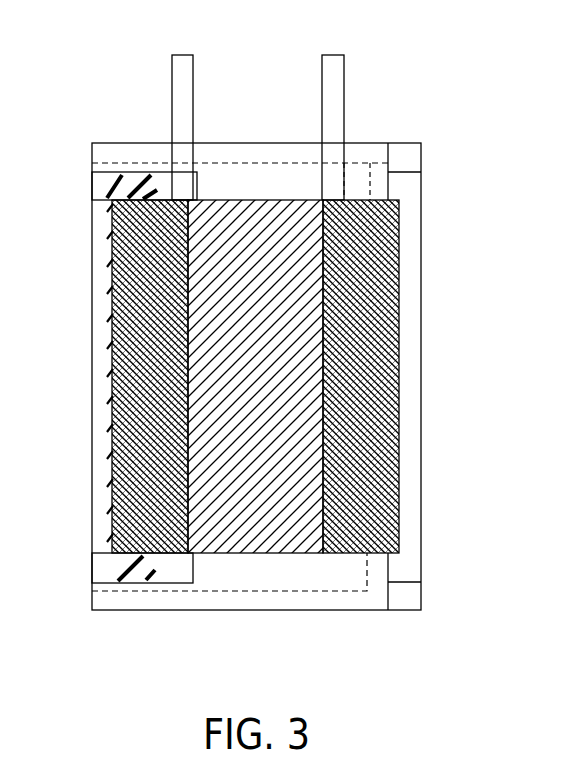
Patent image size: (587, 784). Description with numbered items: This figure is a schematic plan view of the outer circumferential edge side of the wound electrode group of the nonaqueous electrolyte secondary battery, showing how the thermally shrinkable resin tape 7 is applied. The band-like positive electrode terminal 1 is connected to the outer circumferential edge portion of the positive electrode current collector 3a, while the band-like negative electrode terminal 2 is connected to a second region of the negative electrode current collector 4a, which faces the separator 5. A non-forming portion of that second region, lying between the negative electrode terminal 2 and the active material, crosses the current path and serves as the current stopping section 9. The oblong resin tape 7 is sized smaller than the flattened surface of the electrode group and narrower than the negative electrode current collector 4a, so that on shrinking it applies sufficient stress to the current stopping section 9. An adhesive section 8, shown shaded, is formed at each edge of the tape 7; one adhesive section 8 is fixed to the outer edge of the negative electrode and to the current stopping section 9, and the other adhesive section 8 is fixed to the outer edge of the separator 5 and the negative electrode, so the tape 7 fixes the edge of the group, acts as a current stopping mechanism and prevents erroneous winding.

The positive electrode terminal 1 is at (334, 68).
The negative electrode terminal 2 is at (183, 68).
The positive electrode current collector 3a is at (362, 152).
The negative electrode current collector 4a is at (92, 192).
The separator 5 is at (375, 600).
The thermally shrinkable resin tape 7 is at (195, 297).
The adhesive section 8 is at (113, 434).
The current stopping section 9 is at (110, 570).